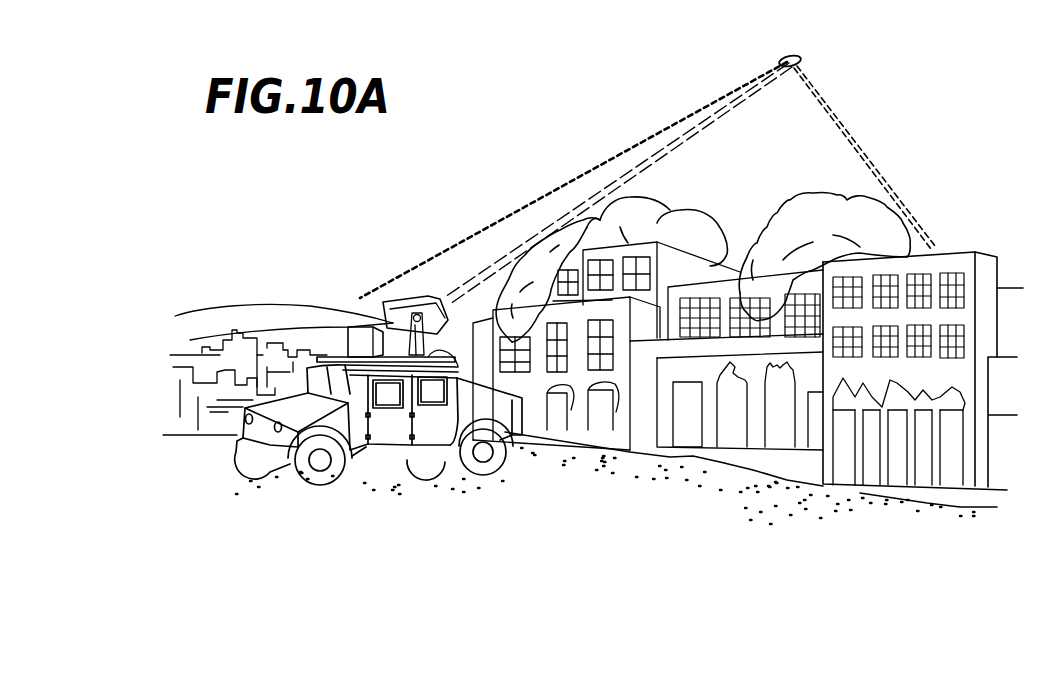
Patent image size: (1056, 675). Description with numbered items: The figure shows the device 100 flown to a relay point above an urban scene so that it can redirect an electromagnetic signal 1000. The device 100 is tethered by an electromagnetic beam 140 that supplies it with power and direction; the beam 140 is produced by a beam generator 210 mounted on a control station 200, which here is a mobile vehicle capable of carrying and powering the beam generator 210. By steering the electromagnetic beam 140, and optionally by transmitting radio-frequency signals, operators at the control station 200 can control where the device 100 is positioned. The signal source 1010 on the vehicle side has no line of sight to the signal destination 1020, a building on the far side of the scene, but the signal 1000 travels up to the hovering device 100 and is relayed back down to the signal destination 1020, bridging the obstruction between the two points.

The device 100 is at (792, 57).
The electromagnetic signal 1000 is at (541, 203).
The electromagnetic beam 140 is at (489, 276).
The beam generator 210 is at (360, 340).
The signal source 1010 is at (348, 292).
The control station 200 is at (226, 425).
The signal destination 1020 is at (943, 236).